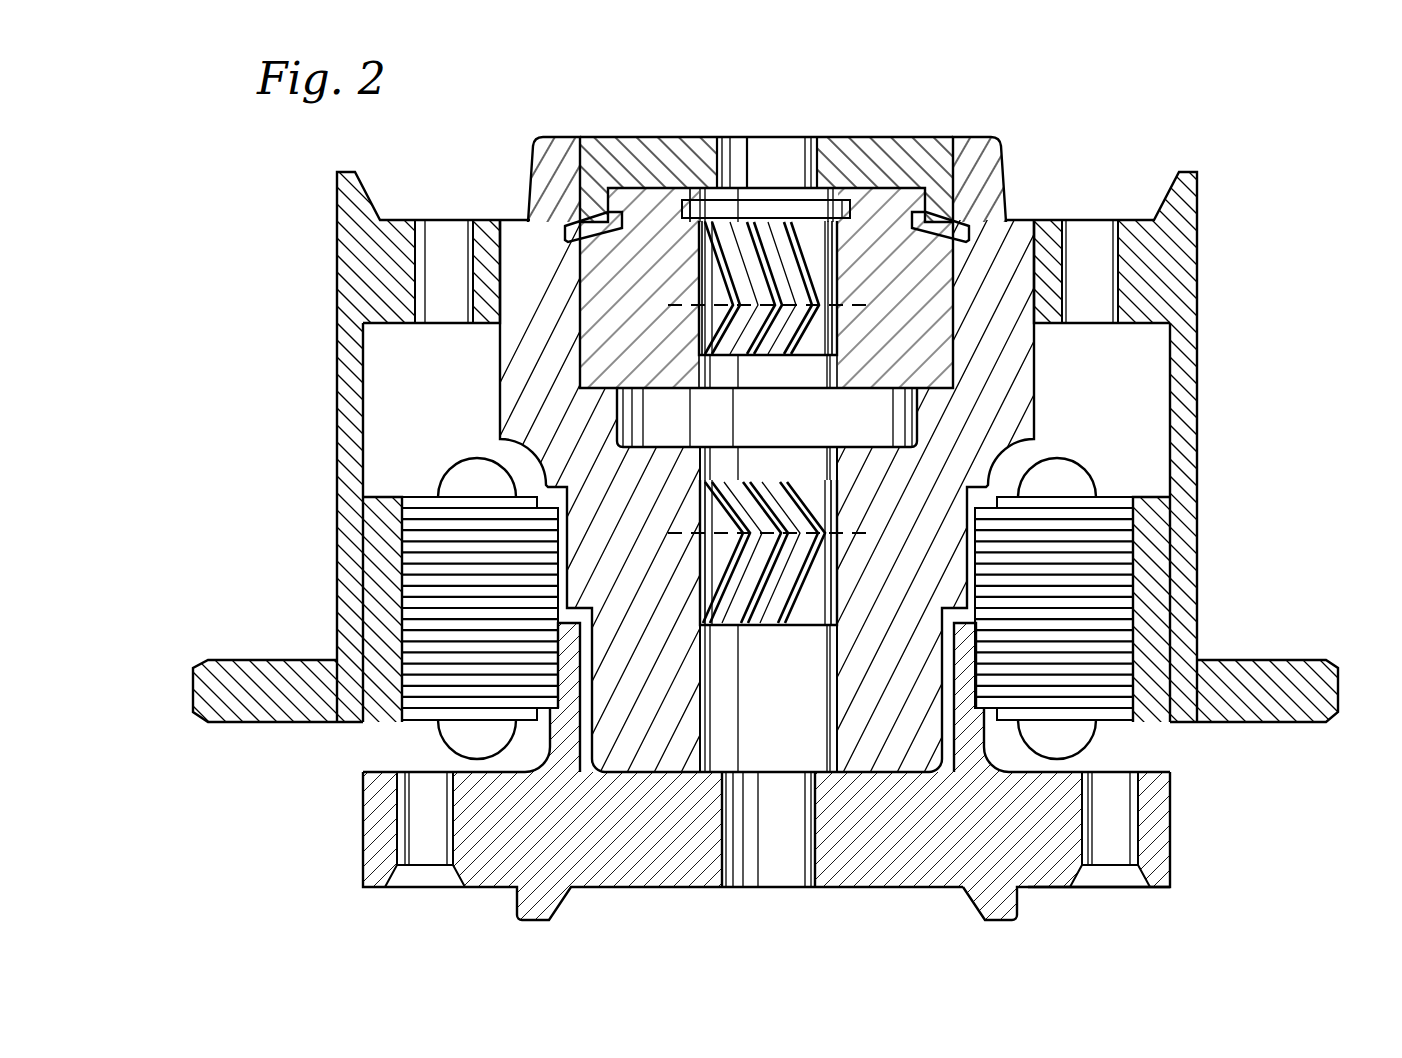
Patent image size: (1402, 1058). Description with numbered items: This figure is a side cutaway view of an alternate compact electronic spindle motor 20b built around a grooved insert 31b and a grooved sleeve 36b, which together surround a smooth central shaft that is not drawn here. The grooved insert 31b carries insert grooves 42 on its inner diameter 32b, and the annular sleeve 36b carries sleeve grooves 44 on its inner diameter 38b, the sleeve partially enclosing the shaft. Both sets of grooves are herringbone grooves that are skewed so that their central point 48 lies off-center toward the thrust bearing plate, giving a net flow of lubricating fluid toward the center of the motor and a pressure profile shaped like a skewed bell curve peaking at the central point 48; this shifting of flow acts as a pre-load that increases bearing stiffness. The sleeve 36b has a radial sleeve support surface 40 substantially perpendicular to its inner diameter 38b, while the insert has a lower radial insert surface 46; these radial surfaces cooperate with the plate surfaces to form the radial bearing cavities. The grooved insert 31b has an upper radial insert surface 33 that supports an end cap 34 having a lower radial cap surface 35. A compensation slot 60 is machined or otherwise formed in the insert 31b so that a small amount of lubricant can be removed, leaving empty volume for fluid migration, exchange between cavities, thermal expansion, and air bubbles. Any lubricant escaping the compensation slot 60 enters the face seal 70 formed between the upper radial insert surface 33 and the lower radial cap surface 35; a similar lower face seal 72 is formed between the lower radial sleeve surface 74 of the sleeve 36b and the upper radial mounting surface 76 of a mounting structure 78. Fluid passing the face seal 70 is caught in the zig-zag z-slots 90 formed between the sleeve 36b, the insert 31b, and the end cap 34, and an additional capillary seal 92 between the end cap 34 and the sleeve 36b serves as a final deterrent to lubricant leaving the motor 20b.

The compact electronic spindle motor 20b is at (166, 336).
The grooved insert 31b is at (957, 377).
The inner diameter of the insert 32b is at (822, 318).
The upper radial insert surface 33 is at (882, 182).
The end cap 34 is at (848, 150).
The lower radial cap surface 35 is at (638, 208).
The grooved sleeve 36b is at (1015, 402).
The inner diameter of the sleeve 38b is at (815, 548).
The radial sleeve support surface 40 is at (690, 440).
The insert grooves 42 is at (810, 248).
The sleeve grooves 44 is at (810, 590).
The lower radial insert surface 46 is at (593, 397).
The central point of the grooves 48 is at (673, 306).
The compensation slot 60 is at (792, 208).
The face seal 70 is at (920, 168).
The lower face seal 72 is at (618, 760).
The lower radial sleeve surface 74 is at (666, 762).
The upper radial mounting surface 76 is at (604, 748).
The mounting structure 78 is at (928, 868).
The z-slots 90 is at (562, 234).
The capillary seal 92 is at (598, 222).